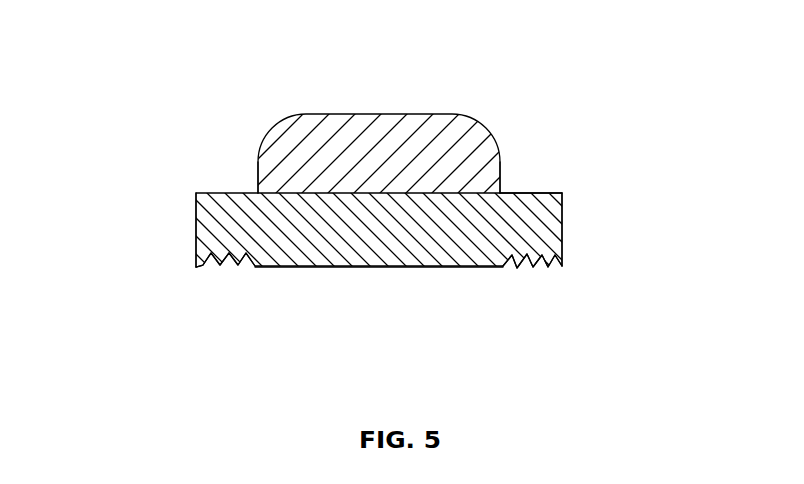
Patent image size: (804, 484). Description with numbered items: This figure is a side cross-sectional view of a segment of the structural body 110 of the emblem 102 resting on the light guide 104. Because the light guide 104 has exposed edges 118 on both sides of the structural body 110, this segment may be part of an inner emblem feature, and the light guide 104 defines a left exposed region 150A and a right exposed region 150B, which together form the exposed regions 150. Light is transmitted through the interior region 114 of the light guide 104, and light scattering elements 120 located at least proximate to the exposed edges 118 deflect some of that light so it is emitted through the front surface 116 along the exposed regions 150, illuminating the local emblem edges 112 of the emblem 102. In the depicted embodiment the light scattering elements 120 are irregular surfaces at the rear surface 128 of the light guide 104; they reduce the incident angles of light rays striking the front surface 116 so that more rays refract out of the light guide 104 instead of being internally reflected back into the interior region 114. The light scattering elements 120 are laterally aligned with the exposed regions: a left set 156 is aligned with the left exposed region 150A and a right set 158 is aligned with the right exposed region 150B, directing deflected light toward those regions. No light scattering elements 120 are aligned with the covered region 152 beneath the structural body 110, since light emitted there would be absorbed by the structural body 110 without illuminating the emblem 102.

The emblem 102 is at (242, 115).
The light guide 104 is at (157, 227).
The structural body 110 is at (377, 143).
The local emblem edges 112 is at (258, 165).
The interior region 114 is at (373, 232).
The front surface 116 is at (545, 193).
The exposed edges 118 is at (197, 207).
The light scattering elements 120 is at (205, 265).
The rear surface 128 is at (305, 268).
The exposed regions 150 is at (555, 148).
The left exposed region 150A is at (223, 182).
The right exposed region 150B is at (527, 180).
The covered region 152 is at (428, 196).
The left set 156 is at (233, 315).
The right set 158 is at (555, 275).